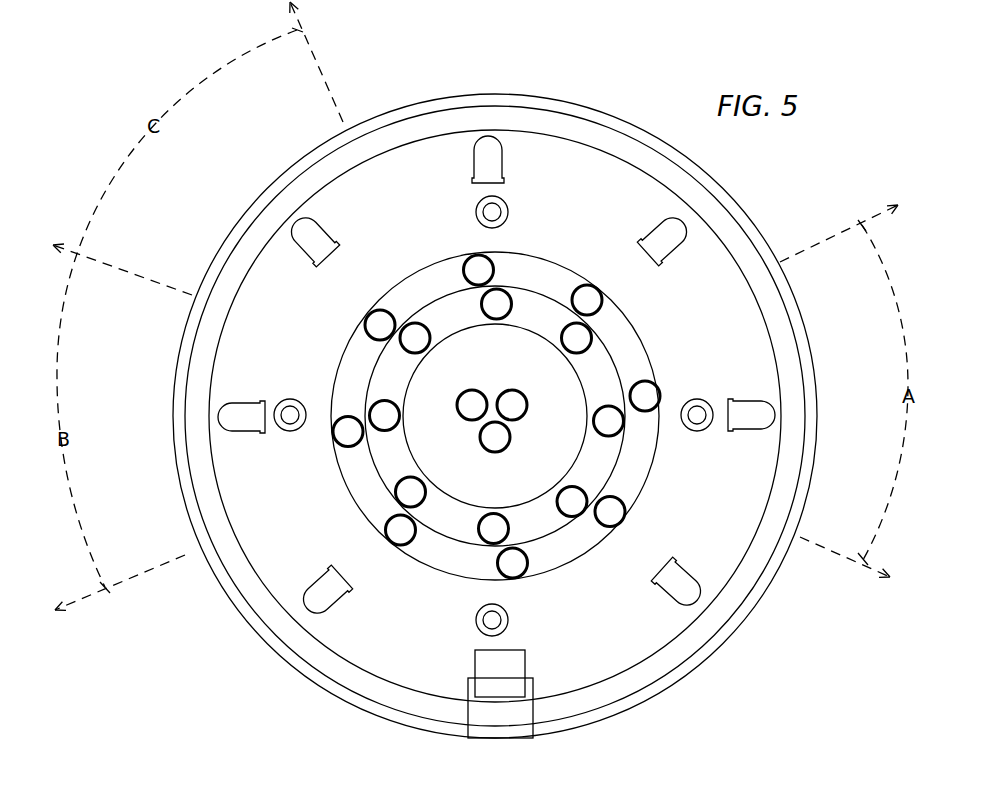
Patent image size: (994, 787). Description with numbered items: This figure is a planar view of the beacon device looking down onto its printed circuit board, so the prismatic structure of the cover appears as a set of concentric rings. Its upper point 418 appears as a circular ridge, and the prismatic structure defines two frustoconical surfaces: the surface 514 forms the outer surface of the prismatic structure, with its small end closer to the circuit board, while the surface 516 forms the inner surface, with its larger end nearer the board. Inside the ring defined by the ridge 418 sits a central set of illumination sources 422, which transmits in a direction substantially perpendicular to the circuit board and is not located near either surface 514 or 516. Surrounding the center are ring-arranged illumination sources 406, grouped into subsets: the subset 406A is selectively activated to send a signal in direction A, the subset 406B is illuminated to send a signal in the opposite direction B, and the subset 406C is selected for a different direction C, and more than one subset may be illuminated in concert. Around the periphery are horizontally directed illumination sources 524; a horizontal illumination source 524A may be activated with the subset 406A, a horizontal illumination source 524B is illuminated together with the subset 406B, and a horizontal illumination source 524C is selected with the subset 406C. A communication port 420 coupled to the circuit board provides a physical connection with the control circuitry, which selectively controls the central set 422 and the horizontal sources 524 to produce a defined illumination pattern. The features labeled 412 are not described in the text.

The illumination sources 406 is at (477, 271).
The subset of illumination sources 406A is at (347, 437).
The subset of illumination sources 406B is at (384, 427).
The subset of illumination sources 406C is at (414, 337).
The mounting hole 412 is at (480, 207).
The upper point 418 is at (540, 292).
The communication port 420 is at (482, 717).
The set of illumination sources 422 is at (468, 411).
The outer surface 514 is at (636, 360).
The inner surface 516 is at (603, 370).
The horizontally directed illumination sources 524 is at (490, 153).
The horizontally directed illumination source 524A is at (762, 414).
The horizontal illumination source 524B is at (225, 414).
The horizontal illumination source 524C is at (297, 237).